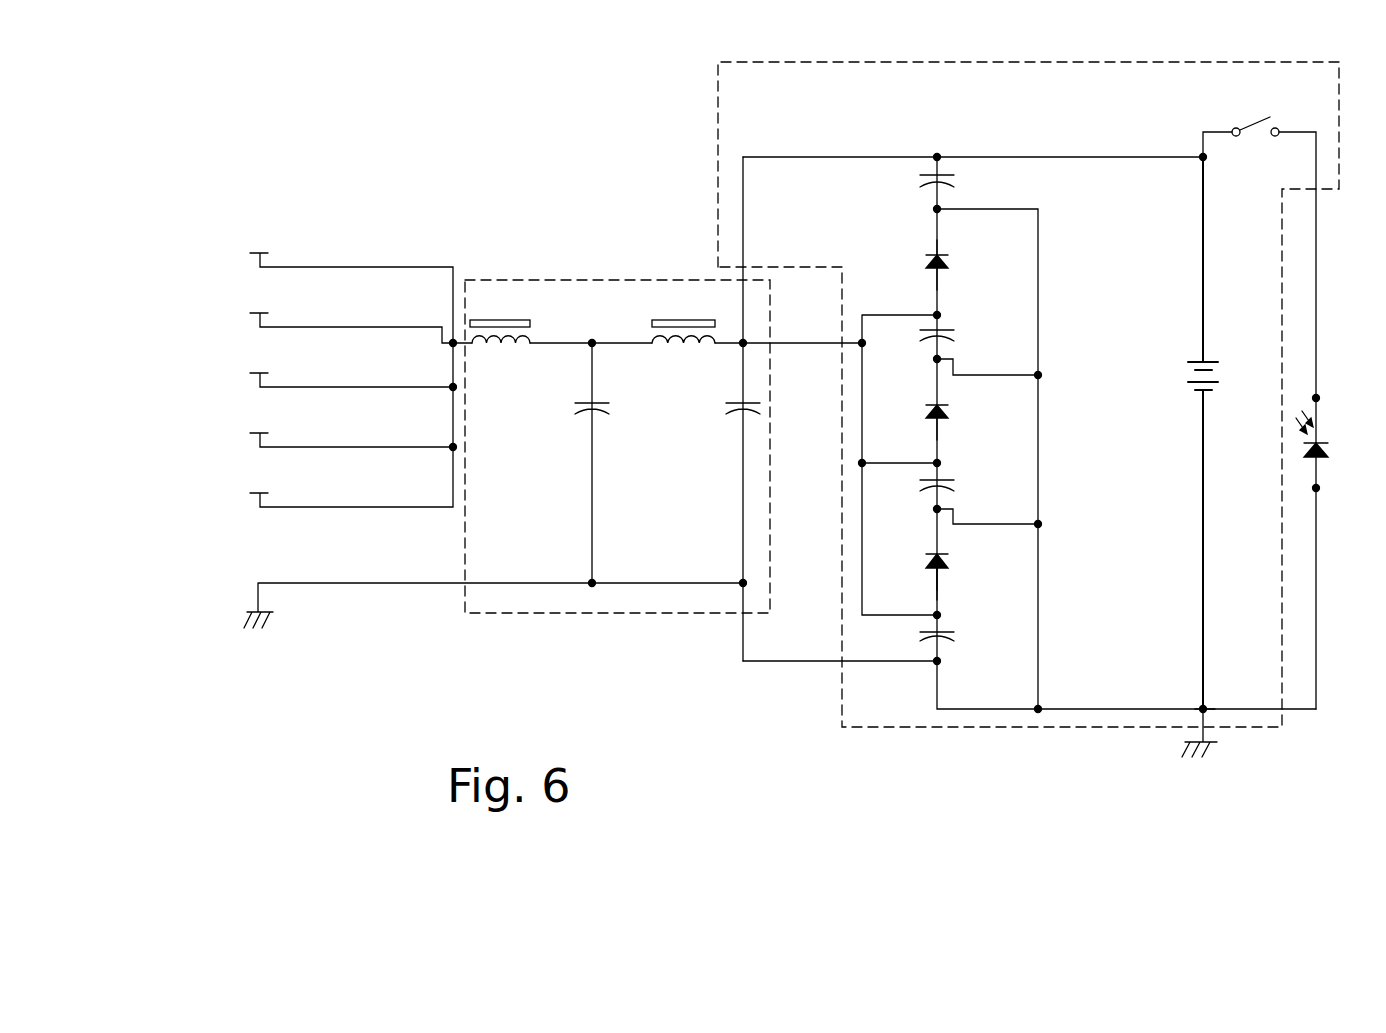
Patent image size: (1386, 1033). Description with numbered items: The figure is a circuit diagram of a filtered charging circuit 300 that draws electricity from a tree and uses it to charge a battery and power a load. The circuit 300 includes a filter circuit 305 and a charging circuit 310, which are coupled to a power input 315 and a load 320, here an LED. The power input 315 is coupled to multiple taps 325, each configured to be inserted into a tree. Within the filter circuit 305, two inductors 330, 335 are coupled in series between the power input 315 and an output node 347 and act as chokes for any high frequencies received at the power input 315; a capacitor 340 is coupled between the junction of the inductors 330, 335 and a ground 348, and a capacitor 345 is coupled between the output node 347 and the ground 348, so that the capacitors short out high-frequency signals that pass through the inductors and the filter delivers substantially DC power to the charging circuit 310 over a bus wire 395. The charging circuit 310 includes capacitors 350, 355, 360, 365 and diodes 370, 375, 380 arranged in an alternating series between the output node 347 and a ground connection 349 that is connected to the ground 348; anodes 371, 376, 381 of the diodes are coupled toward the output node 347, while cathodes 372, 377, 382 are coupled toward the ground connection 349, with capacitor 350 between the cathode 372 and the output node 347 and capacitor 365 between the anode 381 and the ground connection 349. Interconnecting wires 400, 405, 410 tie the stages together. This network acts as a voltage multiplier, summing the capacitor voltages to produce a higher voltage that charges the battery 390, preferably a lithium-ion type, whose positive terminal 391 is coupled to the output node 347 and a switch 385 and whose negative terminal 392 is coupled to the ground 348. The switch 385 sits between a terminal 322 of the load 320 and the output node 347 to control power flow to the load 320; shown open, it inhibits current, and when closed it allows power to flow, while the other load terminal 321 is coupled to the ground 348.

The filtered charging circuit 300 is at (334, 116).
The filter circuit 305 is at (575, 280).
The charging circuit 310 is at (818, 62).
The power input 315 is at (455, 340).
The load 320 is at (1320, 460).
The terminal of the load 321 is at (1320, 462).
The terminal of the load 322 is at (1320, 440).
The taps 325 is at (250, 375).
The inductor 330 is at (530, 345).
The inductor 335 is at (652, 345).
The capacitor 340 is at (597, 412).
The capacitor 345 is at (735, 412).
The output node 347 is at (740, 342).
The ground 348 is at (273, 615).
The ground connection 349 is at (1200, 718).
The capacitor 350 is at (928, 185).
The capacitor 355 is at (925, 340).
The capacitor 360 is at (925, 490).
The capacitor 365 is at (918, 636).
The diode 370 is at (930, 258).
The anode 371 is at (940, 270).
The cathode 372 is at (940, 256).
The diode 375 is at (945, 422).
The anode 376 is at (942, 425).
The cathode 377 is at (930, 405).
The diode 380 is at (942, 570).
The anode 381 is at (935, 571).
The cathode 382 is at (930, 554).
The switch 385 is at (1240, 136).
The battery 390 is at (1190, 364).
The positive terminal 391 is at (1206, 357).
The negative terminal 392 is at (1206, 392).
The charging bus wire 395 is at (833, 157).
The stage 1 wire 400 is at (897, 315).
The stage 2 wire 405 is at (912, 463).
The stage 3 wire 410 is at (862, 505).